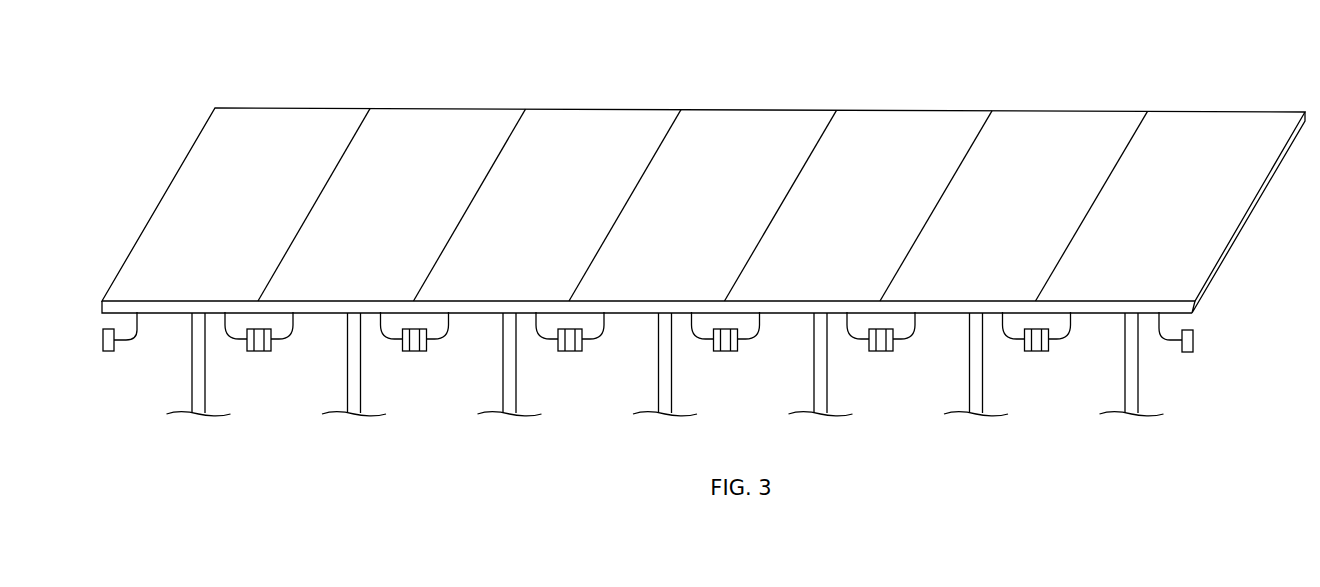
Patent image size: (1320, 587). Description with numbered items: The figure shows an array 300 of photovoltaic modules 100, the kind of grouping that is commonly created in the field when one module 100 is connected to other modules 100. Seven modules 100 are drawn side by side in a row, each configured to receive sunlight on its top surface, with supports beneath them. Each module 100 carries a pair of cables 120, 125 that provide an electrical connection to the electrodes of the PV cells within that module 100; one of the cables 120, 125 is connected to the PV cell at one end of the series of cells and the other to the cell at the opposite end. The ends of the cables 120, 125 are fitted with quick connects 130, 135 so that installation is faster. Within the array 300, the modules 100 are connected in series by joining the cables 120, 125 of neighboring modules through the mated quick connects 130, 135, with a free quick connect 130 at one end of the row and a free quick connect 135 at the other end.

The array 300 is at (326, 66).
The photovoltaic module 100 is at (215, 212).
The cable 120 is at (138, 330).
The cable 125 is at (237, 326).
The quick connect 130 is at (108, 352).
The quick connect 135 is at (253, 352).